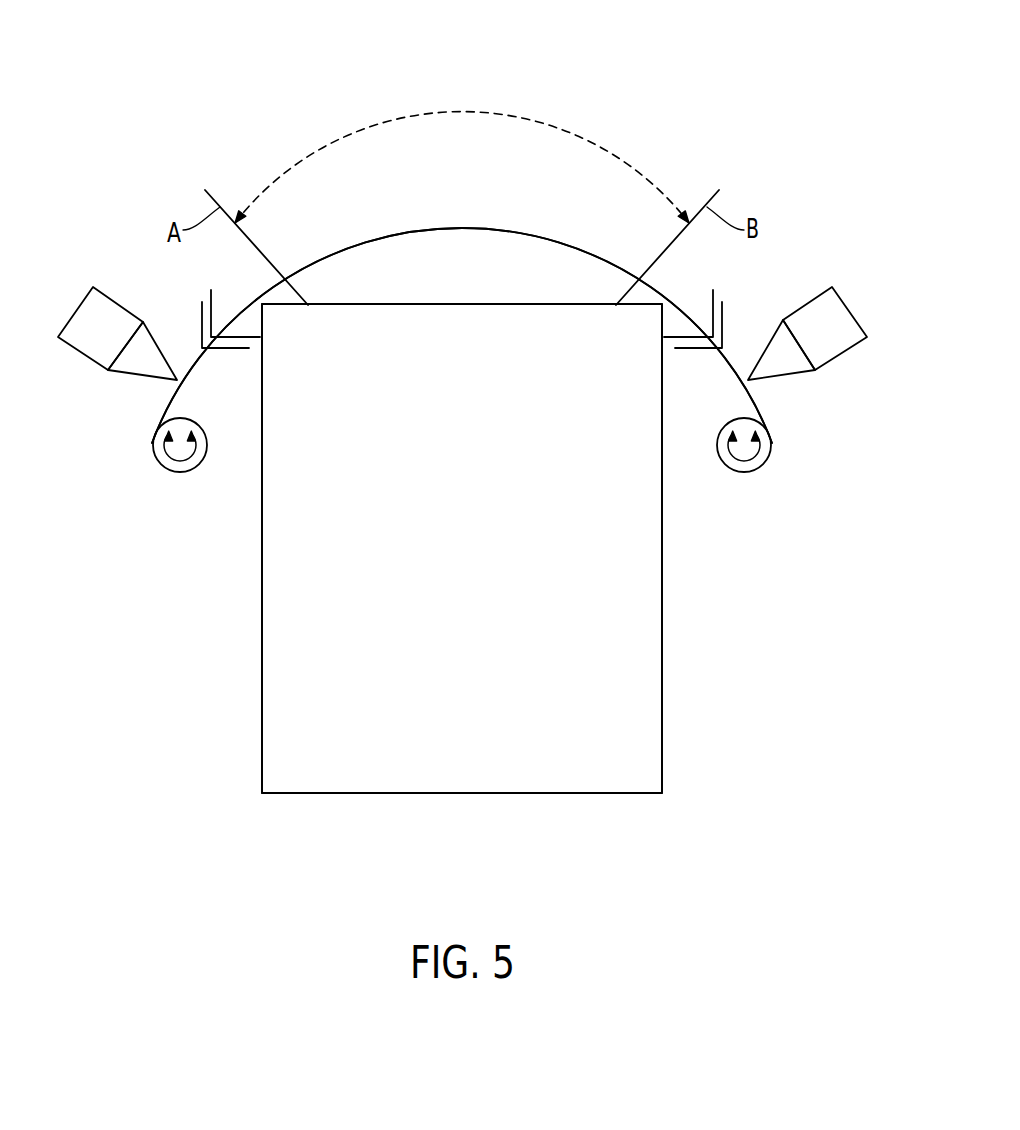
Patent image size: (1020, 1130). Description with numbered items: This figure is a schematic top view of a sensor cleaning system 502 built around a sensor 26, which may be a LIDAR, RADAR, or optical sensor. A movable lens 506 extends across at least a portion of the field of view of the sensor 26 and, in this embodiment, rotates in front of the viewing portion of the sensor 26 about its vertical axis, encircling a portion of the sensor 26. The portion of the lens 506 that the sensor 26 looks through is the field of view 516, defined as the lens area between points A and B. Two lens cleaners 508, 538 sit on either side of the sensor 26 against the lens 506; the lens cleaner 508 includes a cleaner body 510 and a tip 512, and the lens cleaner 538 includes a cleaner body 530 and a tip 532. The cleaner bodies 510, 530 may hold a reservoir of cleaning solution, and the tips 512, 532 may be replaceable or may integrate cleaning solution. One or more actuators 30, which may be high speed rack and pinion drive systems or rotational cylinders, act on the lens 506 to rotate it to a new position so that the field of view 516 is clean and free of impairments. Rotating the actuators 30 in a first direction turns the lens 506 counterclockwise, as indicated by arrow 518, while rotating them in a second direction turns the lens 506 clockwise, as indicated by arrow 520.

The cleaning system 502 is at (186, 86).
The sensor 26 is at (662, 615).
The movable lens 506 is at (492, 222).
The field of view 516 is at (545, 120).
The lens cleaner 508 is at (66, 295).
The cleaner body 510 is at (80, 355).
The tip 512 is at (142, 378).
The arrow 518 is at (211, 297).
The arrow 520 is at (715, 297).
The lens cleaner 538 is at (861, 288).
The cleaner body 530 is at (843, 353).
The tip 532 is at (785, 378).
The actuators 30 is at (155, 462).